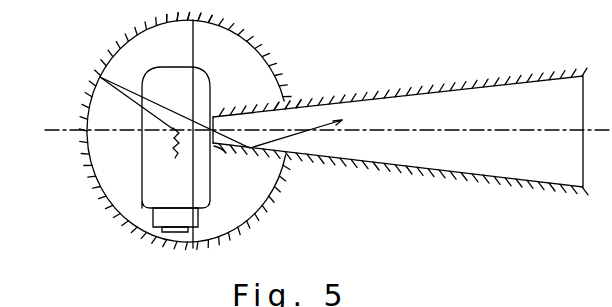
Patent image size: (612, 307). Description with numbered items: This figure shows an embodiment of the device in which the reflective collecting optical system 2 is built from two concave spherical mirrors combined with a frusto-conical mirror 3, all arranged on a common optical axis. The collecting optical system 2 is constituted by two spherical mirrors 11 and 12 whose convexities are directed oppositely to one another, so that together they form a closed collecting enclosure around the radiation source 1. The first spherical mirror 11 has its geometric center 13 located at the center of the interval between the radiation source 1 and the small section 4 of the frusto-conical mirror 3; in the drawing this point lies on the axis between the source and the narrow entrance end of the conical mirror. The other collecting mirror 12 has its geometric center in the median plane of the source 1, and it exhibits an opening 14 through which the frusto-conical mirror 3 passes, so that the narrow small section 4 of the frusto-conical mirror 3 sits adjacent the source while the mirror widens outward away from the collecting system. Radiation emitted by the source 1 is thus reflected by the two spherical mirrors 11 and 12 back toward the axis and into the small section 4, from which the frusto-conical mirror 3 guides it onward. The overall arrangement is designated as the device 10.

The radiation source 1 is at (176, 149).
The reflective collecting optical system 2 is at (169, 18).
The frusto-conical mirror 3 is at (384, 97).
The small section of the frusto-conical mirror 4 is at (216, 147).
The illuminating apparatus 10 is at (560, 5).
The spherical mirror 11 is at (92, 170).
The collecting mirror 12 is at (268, 203).
The geometric center 13 is at (206, 118).
The opening 14 is at (290, 103).